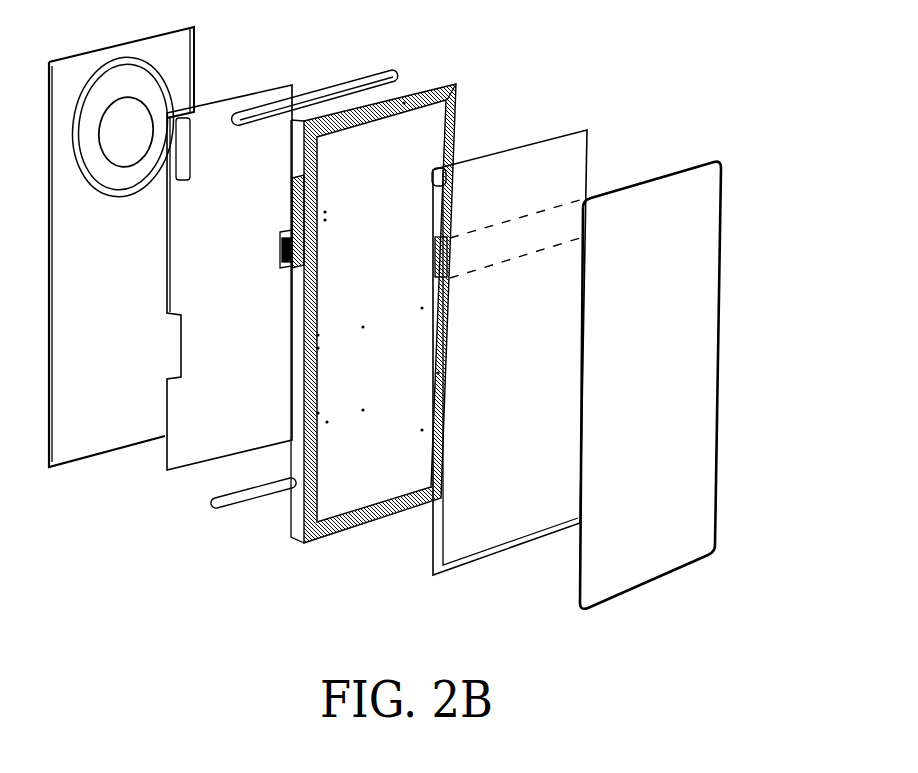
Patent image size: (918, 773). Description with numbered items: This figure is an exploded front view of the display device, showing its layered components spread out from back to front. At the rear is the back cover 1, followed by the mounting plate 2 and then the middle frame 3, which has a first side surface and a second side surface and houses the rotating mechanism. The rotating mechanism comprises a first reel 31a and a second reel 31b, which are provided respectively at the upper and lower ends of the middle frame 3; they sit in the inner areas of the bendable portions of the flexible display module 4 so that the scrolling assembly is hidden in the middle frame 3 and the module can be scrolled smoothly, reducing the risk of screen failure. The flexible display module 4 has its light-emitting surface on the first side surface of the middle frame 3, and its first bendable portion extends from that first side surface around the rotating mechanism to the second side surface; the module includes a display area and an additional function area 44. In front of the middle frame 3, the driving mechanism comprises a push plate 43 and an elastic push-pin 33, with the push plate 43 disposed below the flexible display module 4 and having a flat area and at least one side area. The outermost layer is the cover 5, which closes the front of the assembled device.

The back cover 1 is at (72, 263).
The mounting plate 2 is at (173, 445).
The middle frame 3 is at (457, 85).
The first reel 31a is at (357, 78).
The second reel 31b is at (222, 516).
The elastic push-pin 33 is at (282, 247).
The flexible display module 4 is at (492, 543).
The push plate 43 is at (550, 228).
The additional function area 44 is at (518, 170).
The cover 5 is at (703, 208).